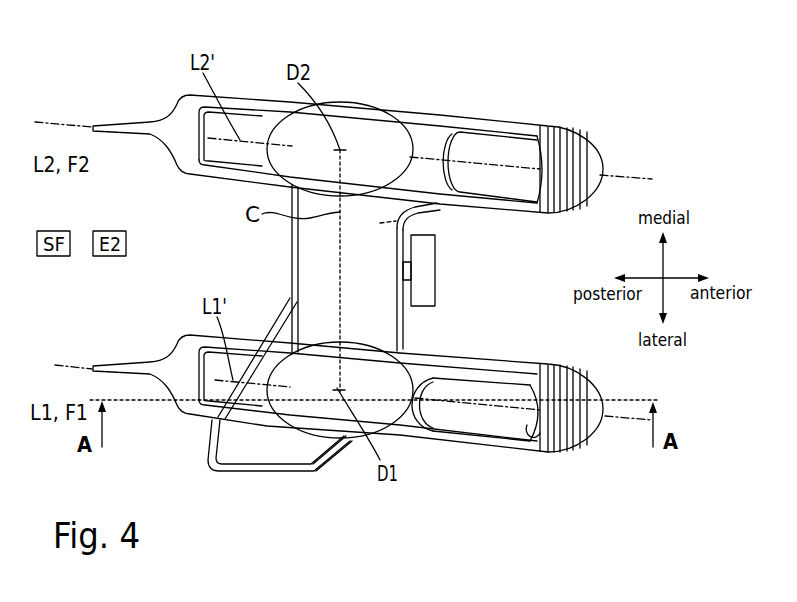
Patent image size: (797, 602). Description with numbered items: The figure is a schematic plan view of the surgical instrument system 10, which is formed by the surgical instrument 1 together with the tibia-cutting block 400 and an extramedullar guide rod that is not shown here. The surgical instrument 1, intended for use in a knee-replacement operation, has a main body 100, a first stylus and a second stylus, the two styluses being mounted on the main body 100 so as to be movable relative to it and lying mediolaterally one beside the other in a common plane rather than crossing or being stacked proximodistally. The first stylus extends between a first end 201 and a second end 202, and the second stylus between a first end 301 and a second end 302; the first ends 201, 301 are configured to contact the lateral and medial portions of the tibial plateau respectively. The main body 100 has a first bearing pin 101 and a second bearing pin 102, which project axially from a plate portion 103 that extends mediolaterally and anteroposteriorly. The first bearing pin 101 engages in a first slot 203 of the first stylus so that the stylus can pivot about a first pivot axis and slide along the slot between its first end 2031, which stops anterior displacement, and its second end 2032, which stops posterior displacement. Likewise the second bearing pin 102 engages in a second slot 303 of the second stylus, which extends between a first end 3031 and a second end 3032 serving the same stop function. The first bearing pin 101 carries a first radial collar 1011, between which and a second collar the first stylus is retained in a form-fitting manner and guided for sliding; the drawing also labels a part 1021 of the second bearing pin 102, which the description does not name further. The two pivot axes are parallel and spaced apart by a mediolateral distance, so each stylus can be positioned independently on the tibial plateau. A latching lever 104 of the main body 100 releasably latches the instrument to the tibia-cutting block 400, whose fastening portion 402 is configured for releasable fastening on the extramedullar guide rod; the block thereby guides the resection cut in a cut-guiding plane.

The surgical instrument 1 is at (524, 48).
The surgical instrument system 10 is at (532, 45).
The main body 100 is at (273, 257).
The first bearing pin 101 is at (337, 451).
The first radial collar 1011 is at (323, 440).
The second bearing pin 102 is at (343, 93).
The oval head 1021 is at (360, 102).
The plate portion 103 is at (418, 233).
The latching lever 104 is at (450, 410).
The first end of first stylus 201 is at (93, 368).
The second end of first stylus 202 is at (604, 428).
The first slot 203 is at (483, 383).
The first end of first slot 2031 is at (208, 430).
The second end of first slot 2032 is at (533, 437).
The first end of second stylus 301 is at (93, 127).
The second end of second stylus 302 is at (604, 169).
The second slot 303 is at (477, 150).
The first end of second slot 3031 is at (182, 172).
The second end of second slot 3032 is at (522, 128).
The tibia-cutting block 400 is at (257, 473).
The fastening portion 402 is at (437, 283).